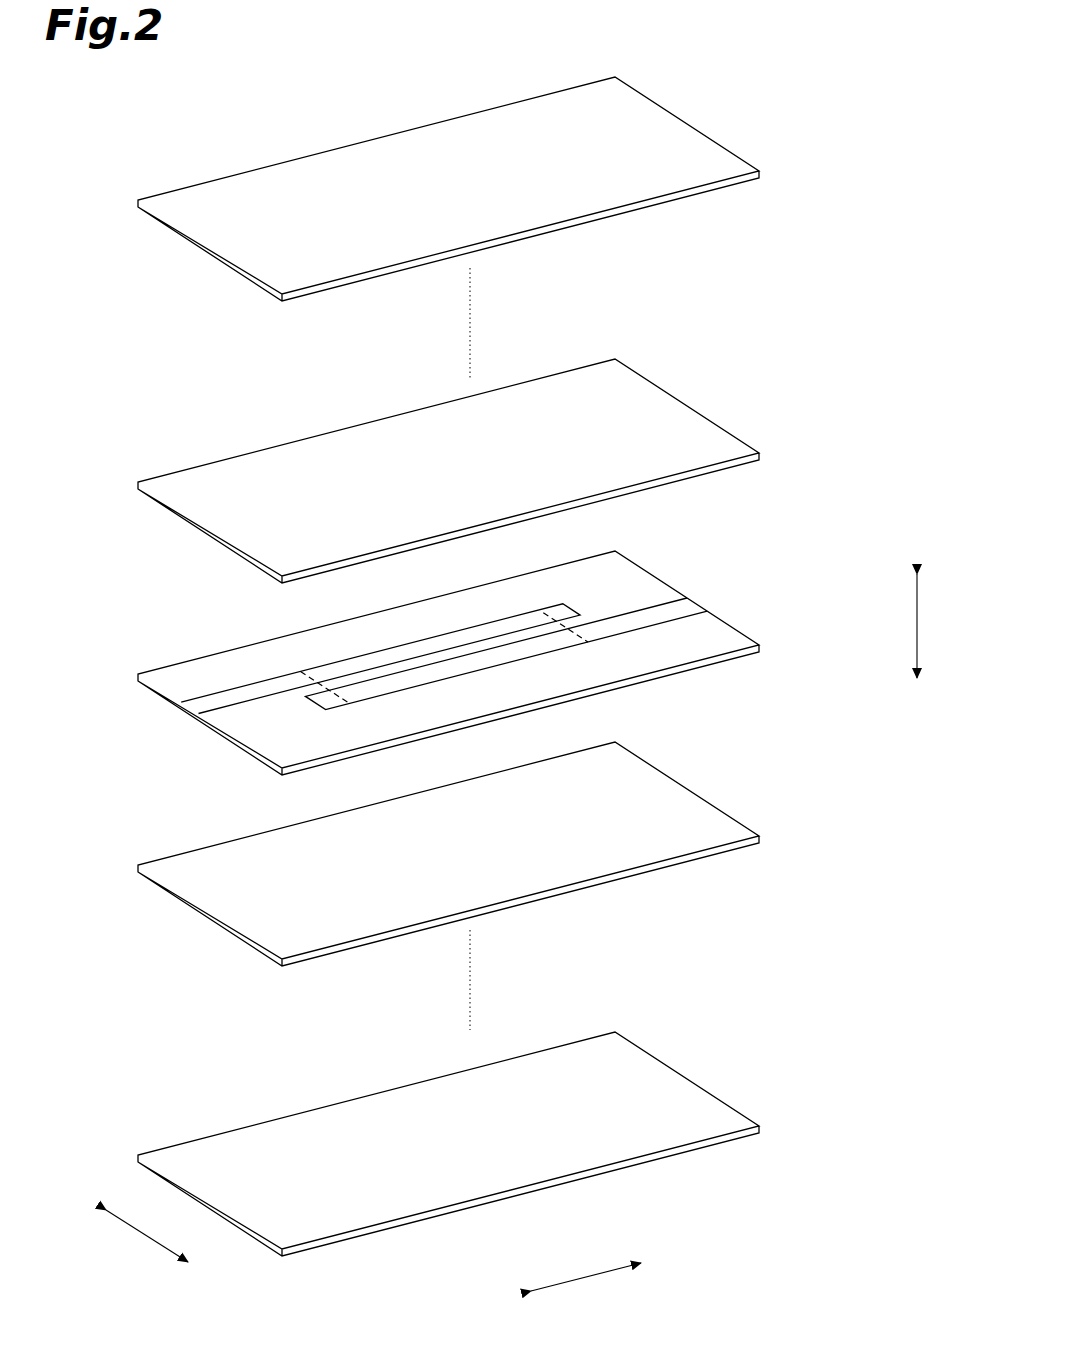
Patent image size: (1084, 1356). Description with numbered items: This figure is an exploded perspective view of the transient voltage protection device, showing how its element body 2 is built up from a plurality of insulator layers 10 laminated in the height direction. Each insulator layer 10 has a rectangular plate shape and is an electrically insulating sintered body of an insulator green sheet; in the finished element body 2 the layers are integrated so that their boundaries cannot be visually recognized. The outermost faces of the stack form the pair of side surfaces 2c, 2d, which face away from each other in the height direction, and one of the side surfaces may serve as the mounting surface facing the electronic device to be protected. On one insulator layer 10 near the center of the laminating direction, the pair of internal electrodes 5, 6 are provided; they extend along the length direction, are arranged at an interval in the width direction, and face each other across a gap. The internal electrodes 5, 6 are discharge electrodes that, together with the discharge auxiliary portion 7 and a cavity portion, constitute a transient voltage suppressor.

The element body 2 is at (821, 105).
The side surface 2c is at (422, 1190).
The side surface 2d is at (450, 130).
The insulator layer 10 is at (478, 660).
The internal electrode 5 is at (667, 615).
The internal electrode 6 is at (237, 693).
The discharge auxiliary portion 7 is at (523, 637).